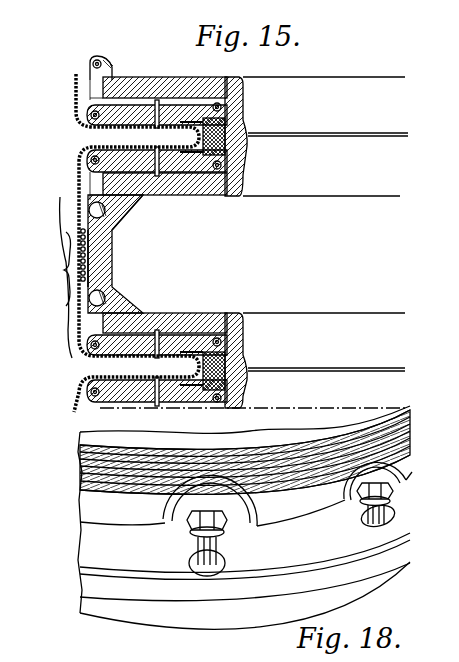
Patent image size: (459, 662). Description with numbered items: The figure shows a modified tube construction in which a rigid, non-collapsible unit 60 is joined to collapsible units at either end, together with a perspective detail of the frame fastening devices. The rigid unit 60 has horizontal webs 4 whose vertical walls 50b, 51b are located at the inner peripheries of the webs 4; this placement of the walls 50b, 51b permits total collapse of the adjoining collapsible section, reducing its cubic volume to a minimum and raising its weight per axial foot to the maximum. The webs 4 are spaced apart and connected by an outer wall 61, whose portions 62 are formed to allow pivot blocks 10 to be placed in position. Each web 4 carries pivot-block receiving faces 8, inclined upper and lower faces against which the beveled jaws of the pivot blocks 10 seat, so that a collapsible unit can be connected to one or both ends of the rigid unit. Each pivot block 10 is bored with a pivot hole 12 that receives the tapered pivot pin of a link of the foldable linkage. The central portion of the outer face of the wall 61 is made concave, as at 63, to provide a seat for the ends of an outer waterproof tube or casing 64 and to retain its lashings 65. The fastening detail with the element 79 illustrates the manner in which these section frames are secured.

In FIG. 15, the horizontal web 4 is at (170, 77).
In FIG. 15, the inclined faces 8 is at (100, 182).
In FIG. 15, the pivot block 10 is at (99, 90).
In FIG. 15, the pivot hole 12 is at (89, 63).
In FIG. 15, the vertical wall 50b is at (245, 106).
In FIG. 15, the vertical wall 51b is at (245, 171).
In FIG. 15, the rigid unit 60 is at (48, 269).
In FIG. 15, the outer wall 61 is at (113, 250).
In FIG. 18, the outer wall 61 is at (305, 506).
In FIG. 15, the wall portions 62 is at (131, 212).
In FIG. 15, the concave portion 63 is at (100, 262).
In FIG. 15, the outer waterproof tube 64 is at (78, 318).
In FIG. 15, the lashing 65 is at (79, 240).
In FIG. 18, the bolt 79 is at (228, 511).